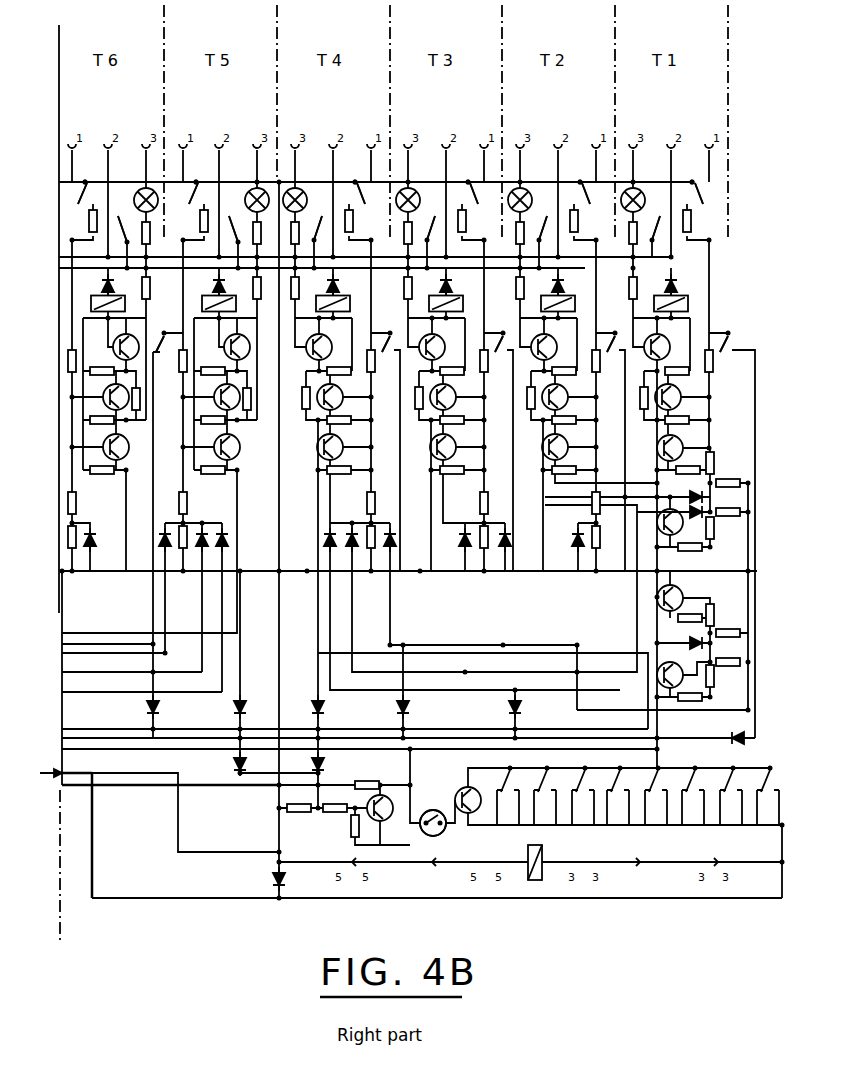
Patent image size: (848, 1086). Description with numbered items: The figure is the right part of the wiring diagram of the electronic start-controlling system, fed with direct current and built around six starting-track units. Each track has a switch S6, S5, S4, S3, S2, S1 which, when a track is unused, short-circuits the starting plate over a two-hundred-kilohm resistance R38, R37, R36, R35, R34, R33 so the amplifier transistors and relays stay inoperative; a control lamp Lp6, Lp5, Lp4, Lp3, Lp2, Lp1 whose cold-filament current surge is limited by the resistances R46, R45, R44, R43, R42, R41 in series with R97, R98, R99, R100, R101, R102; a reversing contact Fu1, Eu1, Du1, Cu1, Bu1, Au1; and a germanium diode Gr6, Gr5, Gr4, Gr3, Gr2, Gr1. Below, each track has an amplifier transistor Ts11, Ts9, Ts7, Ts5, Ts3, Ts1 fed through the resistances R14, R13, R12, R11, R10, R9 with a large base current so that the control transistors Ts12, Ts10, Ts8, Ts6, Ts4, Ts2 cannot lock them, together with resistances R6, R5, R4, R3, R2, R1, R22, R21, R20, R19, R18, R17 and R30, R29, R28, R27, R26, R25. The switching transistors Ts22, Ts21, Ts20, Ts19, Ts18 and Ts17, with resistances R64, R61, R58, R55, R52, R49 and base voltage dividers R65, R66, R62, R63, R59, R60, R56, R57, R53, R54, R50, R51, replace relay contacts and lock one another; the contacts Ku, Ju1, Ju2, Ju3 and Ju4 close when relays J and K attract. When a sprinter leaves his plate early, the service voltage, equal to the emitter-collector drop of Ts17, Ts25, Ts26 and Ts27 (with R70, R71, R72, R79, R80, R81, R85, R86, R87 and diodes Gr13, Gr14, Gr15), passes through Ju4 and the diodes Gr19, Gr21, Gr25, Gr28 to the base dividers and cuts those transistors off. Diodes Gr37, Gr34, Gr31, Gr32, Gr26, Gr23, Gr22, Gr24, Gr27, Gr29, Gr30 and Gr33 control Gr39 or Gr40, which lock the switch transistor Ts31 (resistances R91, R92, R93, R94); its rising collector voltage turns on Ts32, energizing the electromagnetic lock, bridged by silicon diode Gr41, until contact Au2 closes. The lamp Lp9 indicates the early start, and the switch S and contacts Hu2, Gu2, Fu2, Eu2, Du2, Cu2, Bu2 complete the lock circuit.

The switch S6 is at (89, 192).
The control lamp Lp6 is at (135, 199).
The reversing contact Fu1 is at (122, 222).
The layer resistance R38 is at (82, 223).
The layer resistance R46 is at (152, 237).
The germanium diode Gr6 is at (118, 286).
The layer resistance R97 is at (158, 288).
The layer resistance R6 is at (68, 351).
The pnp transistor Ts11 is at (112, 345).
The layer resistance R14 is at (100, 364).
The layer resistance R22 is at (141, 390).
The control transistor Ts12 is at (100, 394).
The layer resistance R30 is at (93, 413).
The switching transistor Ts22 is at (99, 444).
The layer resistance R64 is at (94, 463).
The layer resistance R65 is at (85, 503).
The layer resistance R66 is at (77, 543).
The germanium diode Gr37 is at (99, 545).
The switch S5 is at (200, 192).
The control lamp Lp5 is at (247, 199).
The reversing contact Eu1 is at (233, 222).
The layer resistance R37 is at (193, 223).
The layer resistance R45 is at (263, 237).
The germanium diode Gr5 is at (229, 286).
The layer resistance R98 is at (264, 292).
The layer resistance R5 is at (179, 351).
The relay contact Ku is at (157, 360).
The pnp transistor Ts9 is at (224, 344).
The layer resistance R13 is at (211, 364).
The layer resistance R21 is at (258, 393).
The control transistor Ts10 is at (213, 396).
The layer resistance R29 is at (205, 414).
The switching transistor Ts21 is at (211, 444).
The layer resistance R61 is at (206, 463).
The layer resistance R62 is at (196, 503).
The layer resistance R63 is at (178, 543).
The germanium diode Gr34 is at (152, 545).
The germanium diode Gr31 is at (199, 546).
The germanium diode Gr32 is at (232, 546).
The control lamp Lp4 is at (306, 199).
The reversing contact Du1 is at (324, 221).
The switch S4 is at (350, 192).
The layer resistance R36 is at (355, 224).
The layer resistance R44 is at (286, 235).
The germanium diode Gr4 is at (321, 286).
The layer resistance R99 is at (303, 292).
The pnp transistor Ts7 is at (329, 347).
The layer resistance R12 is at (342, 364).
The layer resistance R4 is at (375, 349).
The relay contact Ju1 is at (389, 360).
The control transistor Ts8 is at (339, 395).
The layer resistance R20 is at (296, 392).
The layer resistance R28 is at (344, 414).
The switching transistor Ts20 is at (344, 445).
The layer resistance R58 is at (346, 463).
The layer resistance R59 is at (380, 503).
The layer resistance R60 is at (363, 546).
The germanium diode Gr28 is at (324, 548).
The germanium diode Gr26 is at (364, 559).
The germanium diode Gr23 is at (388, 548).
The control lamp Lp3 is at (419, 199).
The reversing contact Cu1 is at (437, 221).
The switch S3 is at (463, 192).
The layer resistance R35 is at (468, 224).
The layer resistance R43 is at (398, 235).
The germanium diode Gr3 is at (434, 286).
The layer resistance R100 is at (392, 288).
The pnp transistor Ts5 is at (442, 347).
The layer resistance R11 is at (454, 364).
The layer resistance R3 is at (488, 349).
The relay contact Ju2 is at (502, 360).
The control transistor Ts6 is at (452, 395).
The layer resistance R19 is at (409, 392).
The layer resistance R27 is at (458, 414).
The switching transistor Ts19 is at (457, 445).
The layer resistance R55 is at (459, 463).
The layer resistance R56 is at (493, 503).
The layer resistance R57 is at (485, 537).
The germanium diode Gr25 is at (453, 548).
The germanium diode Gr22 is at (513, 544).
The control lamp Lp2 is at (531, 199).
The reversing contact Bu1 is at (549, 221).
The switch S2 is at (575, 192).
The layer resistance R34 is at (580, 224).
The layer resistance R42 is at (511, 235).
The germanium diode Gr2 is at (546, 286).
The layer resistance R101 is at (506, 288).
The pnp transistor Ts3 is at (554, 347).
The layer resistance R10 is at (566, 364).
The layer resistance R2 is at (600, 349).
The relay contact Ju3 is at (614, 360).
The control transistor Ts4 is at (564, 395).
The layer resistance R18 is at (521, 392).
The layer resistance R26 is at (570, 414).
The switching transistor Ts18 is at (569, 445).
The layer resistance R52 is at (571, 463).
The layer resistance R53 is at (604, 503).
The layer resistance R54 is at (604, 542).
The germanium diode Gr21 is at (561, 544).
The control lamp Lp1 is at (644, 199).
The reversing contact Au1 is at (662, 221).
The switch S1 is at (688, 192).
The layer resistance R33 is at (693, 224).
The layer resistance R41 is at (624, 235).
The germanium diode Gr1 is at (659, 286).
The layer resistance R102 is at (617, 288).
The pnp transistor Ts1 is at (667, 347).
The layer resistance R9 is at (677, 364).
The layer resistance R1 is at (713, 349).
The relay contact Ju4 is at (726, 360).
The control transistor Ts2 is at (677, 395).
The layer resistance R17 is at (634, 392).
The layer resistance R25 is at (683, 414).
The switching transistor Ts17 is at (684, 444).
The layer resistance R49 is at (690, 464).
The layer resistance R50 is at (722, 459).
The layer resistance R51 is at (728, 475).
The germanium diode Gr13 is at (683, 492).
The germanium diode Gr14 is at (715, 507).
The layer resistance R71 is at (728, 530).
The layer resistance R70 is at (722, 528).
The switching transistor Ts25 is at (670, 537).
The layer resistance R72 is at (696, 555).
The switching transistor Ts26 is at (661, 600).
The layer resistance R79 is at (690, 601).
The layer resistance R80 is at (722, 609).
The layer resistance R81 is at (728, 623).
The germanium diode Gr15 is at (685, 639).
The layer resistance R85 is at (727, 654).
The layer resistance R86 is at (722, 677).
The layer resistance R87 is at (703, 702).
The switching transistor Ts27 is at (677, 673).
The germanium diode Gr19 is at (730, 748).
The germanium diode Gr30 is at (170, 707).
The germanium diode Gr33 is at (255, 707).
The germanium diode Gr24 is at (332, 707).
The germanium diode Gr29 is at (418, 707).
The germanium diode Gr27 is at (532, 707).
The germanium diode Gr39 is at (217, 764).
The germanium diode Gr40 is at (335, 764).
The silicon diode Gr41 is at (296, 879).
The tell-tale lamp Lp9 is at (77, 788).
The layer resistance R91 is at (372, 778).
The layer resistance R92 is at (298, 801).
The layer resistance R93 is at (334, 801).
The layer resistance R94 is at (344, 830).
The switch transistor Ts31 is at (379, 818).
The transistor Ts32 is at (467, 790).
The switch S is at (434, 830).
The reversing contact Hu2 is at (502, 796).
The reversing contact Gu2 is at (539, 796).
The reversing contact Fu2 is at (577, 796).
The reversing contact Eu2 is at (613, 796).
The reversing contact Du2 is at (651, 796).
The reversing contact Cu2 is at (688, 796).
The reversing contact Bu2 is at (727, 796).
The reversing contact Au2 is at (764, 796).